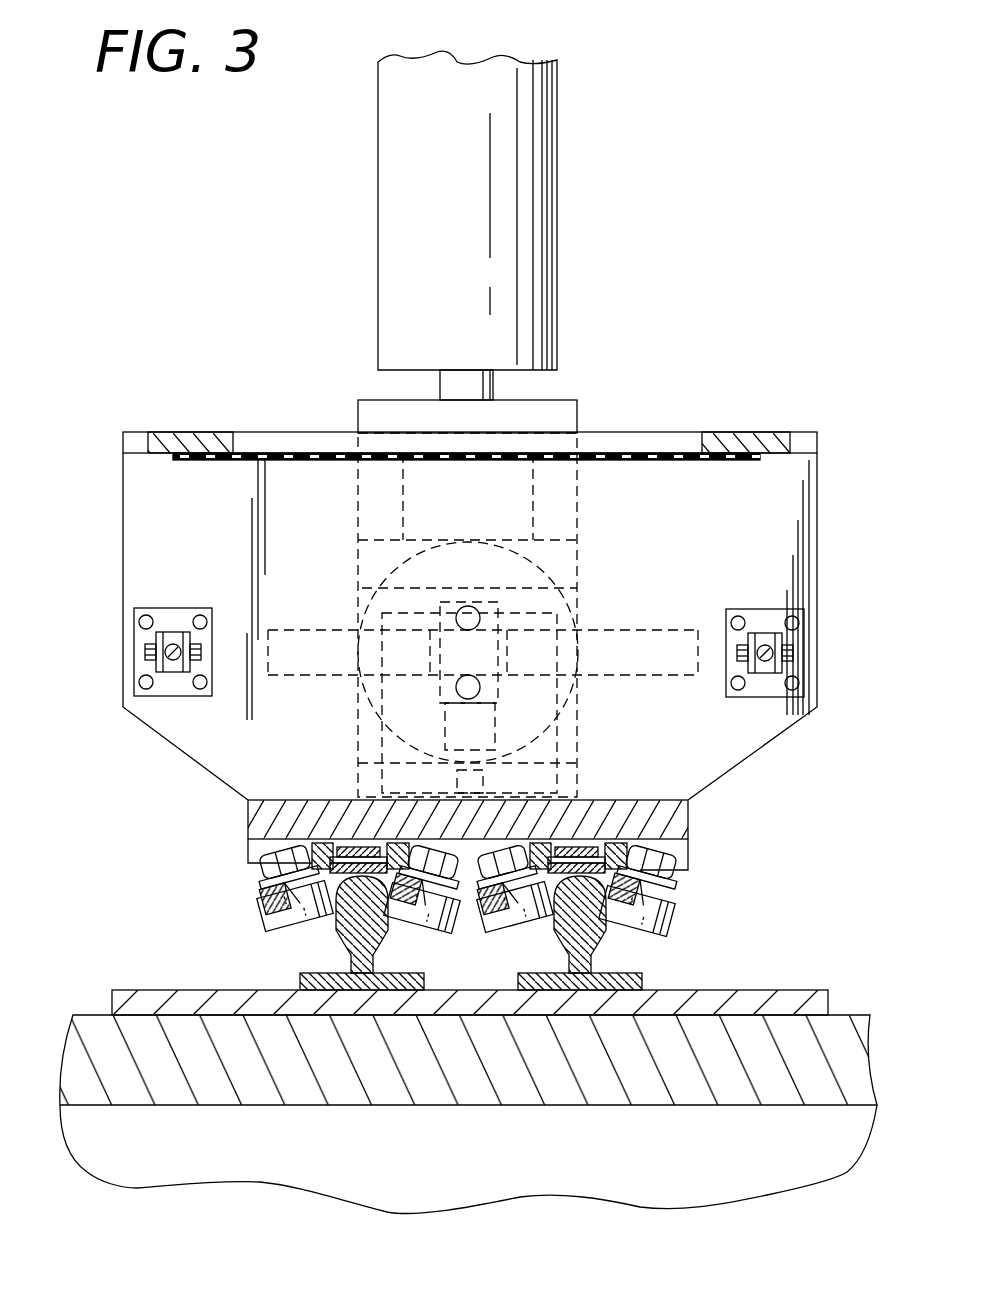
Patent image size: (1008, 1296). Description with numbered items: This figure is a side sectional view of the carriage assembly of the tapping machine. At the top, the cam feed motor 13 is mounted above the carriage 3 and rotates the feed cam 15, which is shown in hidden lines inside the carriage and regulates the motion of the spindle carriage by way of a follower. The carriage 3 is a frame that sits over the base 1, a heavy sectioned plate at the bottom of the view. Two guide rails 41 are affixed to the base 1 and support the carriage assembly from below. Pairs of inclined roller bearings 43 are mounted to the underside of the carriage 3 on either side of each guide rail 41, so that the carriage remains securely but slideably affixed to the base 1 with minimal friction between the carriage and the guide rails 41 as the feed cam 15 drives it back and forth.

The base 1 is at (80, 1032).
The carriage 3 is at (135, 546).
The feed motor 13 is at (525, 240).
The feed cam 15 is at (615, 642).
The guide rails 41 is at (350, 972).
The roller bearings 43 is at (265, 912).